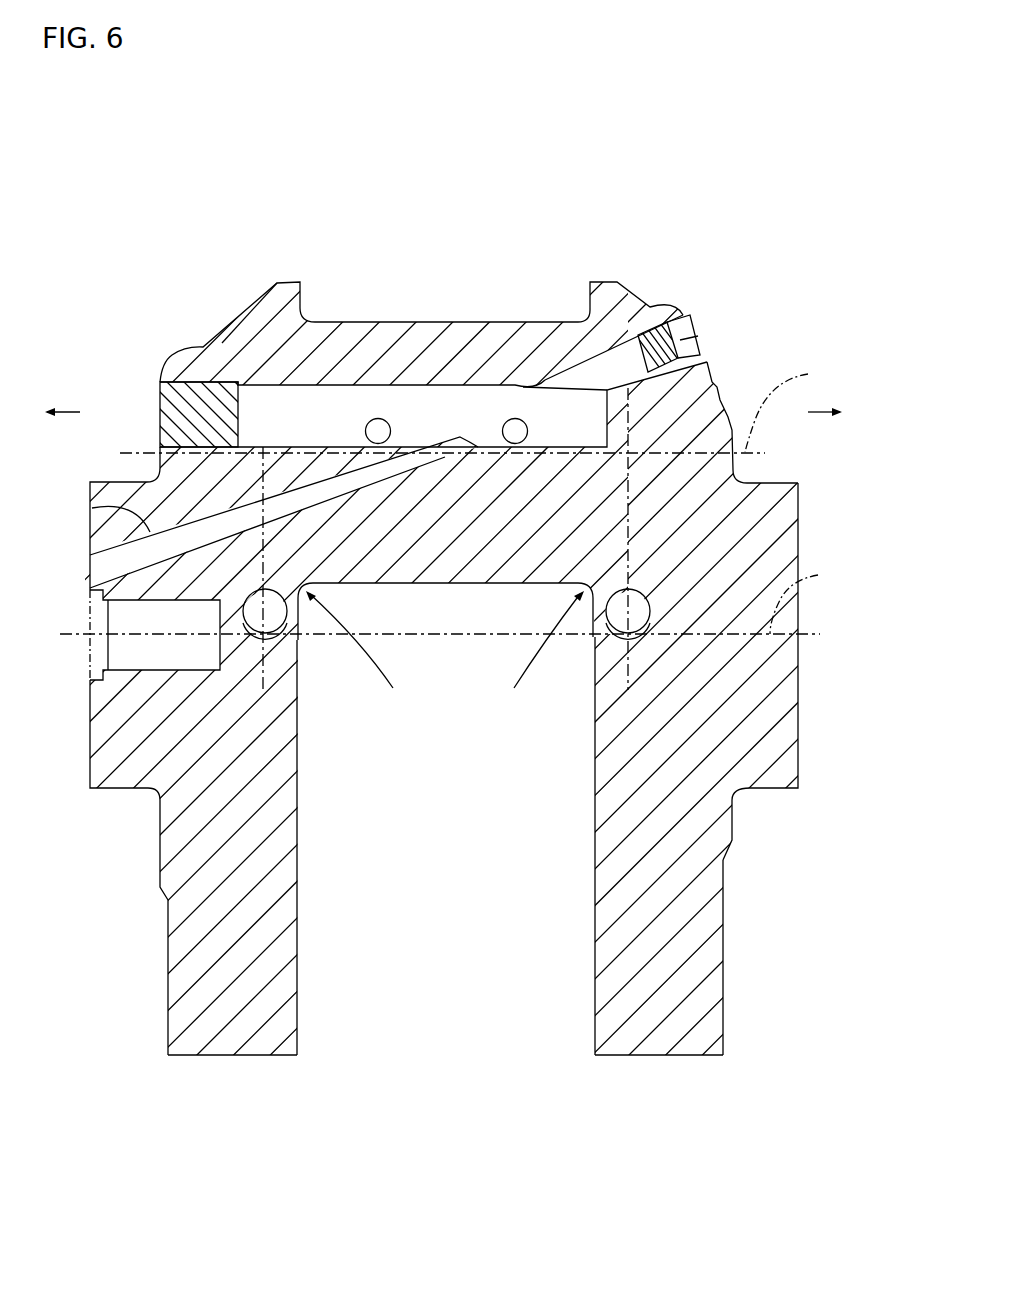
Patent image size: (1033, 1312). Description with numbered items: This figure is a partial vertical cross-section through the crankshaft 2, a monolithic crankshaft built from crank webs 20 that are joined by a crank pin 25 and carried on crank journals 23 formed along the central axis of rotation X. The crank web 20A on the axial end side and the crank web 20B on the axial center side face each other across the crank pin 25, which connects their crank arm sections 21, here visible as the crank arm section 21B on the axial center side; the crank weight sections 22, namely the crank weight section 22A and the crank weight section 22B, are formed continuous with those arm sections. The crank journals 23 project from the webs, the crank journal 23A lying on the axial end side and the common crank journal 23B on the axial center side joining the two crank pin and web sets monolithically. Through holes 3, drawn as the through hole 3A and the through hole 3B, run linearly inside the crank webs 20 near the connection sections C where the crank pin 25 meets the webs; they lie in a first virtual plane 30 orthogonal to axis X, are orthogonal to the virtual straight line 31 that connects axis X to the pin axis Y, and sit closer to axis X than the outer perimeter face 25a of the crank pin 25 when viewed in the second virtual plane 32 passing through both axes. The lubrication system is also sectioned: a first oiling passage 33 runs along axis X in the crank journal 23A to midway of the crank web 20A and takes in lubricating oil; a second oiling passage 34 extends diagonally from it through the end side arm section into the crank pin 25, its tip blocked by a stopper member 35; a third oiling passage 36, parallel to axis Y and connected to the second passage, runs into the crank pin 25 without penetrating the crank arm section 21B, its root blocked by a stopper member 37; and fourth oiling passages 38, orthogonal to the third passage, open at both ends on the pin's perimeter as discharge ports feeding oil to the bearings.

The crankshaft 2 is at (507, 168).
The through holes 3 is at (446, 663).
The through hole 3A is at (288, 640).
The through hole 3B is at (605, 640).
The crank webs 20 is at (445, 846).
The crank web 20A is at (312, 800).
The crank web 20B is at (570, 800).
The crank arm sections 21 is at (775, 392).
The crank arm section 21B is at (712, 376).
The crank weight sections 22 is at (445, 1116).
The crank weight section 22A is at (236, 1057).
The crank weight section 22B is at (650, 1057).
The crank journals 23 is at (454, 871).
The crank journal 23A is at (115, 795).
The crank journal 23B is at (762, 790).
The crank pin 25 is at (395, 322).
The outer perimeter face 25a is at (418, 586).
The first virtual plane 30 is at (632, 527).
The virtual straight line 31 is at (630, 484).
The second virtual plane 32 is at (516, 670).
The first oiling passage 33 is at (120, 672).
The second oiling passage 34 is at (556, 376).
The stopper member 35 is at (655, 333).
The third oiling passage 36 is at (440, 385).
The stopper member 37 is at (203, 380).
The fourth oiling passages 38 is at (390, 432).